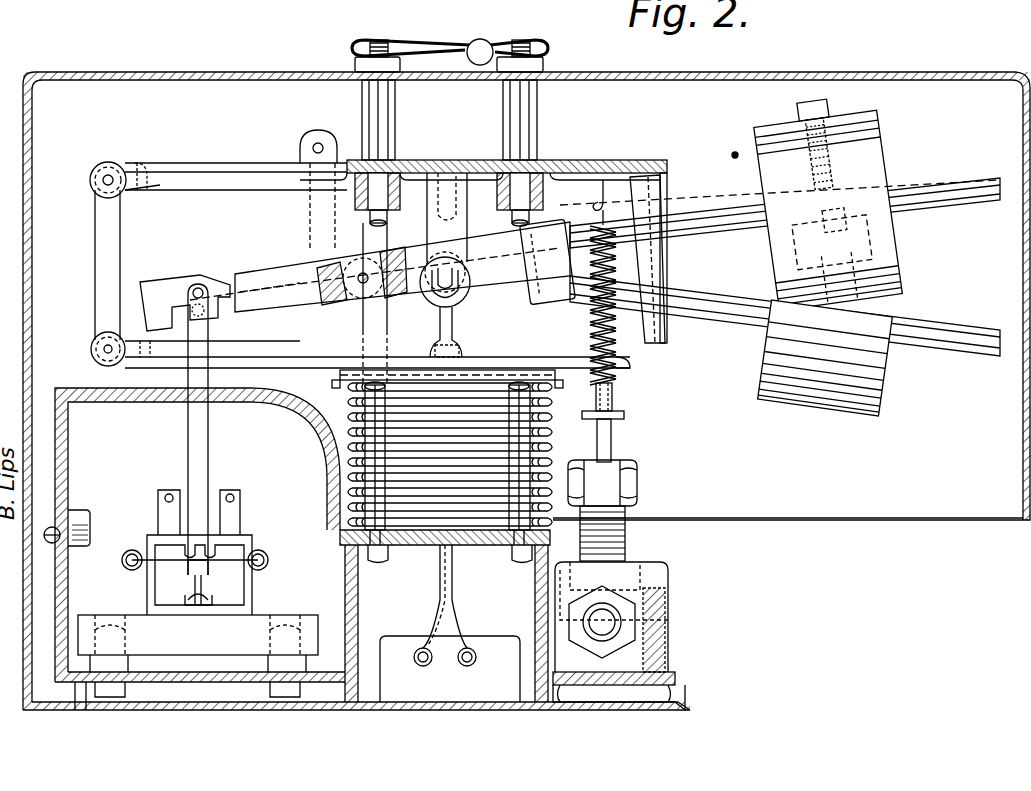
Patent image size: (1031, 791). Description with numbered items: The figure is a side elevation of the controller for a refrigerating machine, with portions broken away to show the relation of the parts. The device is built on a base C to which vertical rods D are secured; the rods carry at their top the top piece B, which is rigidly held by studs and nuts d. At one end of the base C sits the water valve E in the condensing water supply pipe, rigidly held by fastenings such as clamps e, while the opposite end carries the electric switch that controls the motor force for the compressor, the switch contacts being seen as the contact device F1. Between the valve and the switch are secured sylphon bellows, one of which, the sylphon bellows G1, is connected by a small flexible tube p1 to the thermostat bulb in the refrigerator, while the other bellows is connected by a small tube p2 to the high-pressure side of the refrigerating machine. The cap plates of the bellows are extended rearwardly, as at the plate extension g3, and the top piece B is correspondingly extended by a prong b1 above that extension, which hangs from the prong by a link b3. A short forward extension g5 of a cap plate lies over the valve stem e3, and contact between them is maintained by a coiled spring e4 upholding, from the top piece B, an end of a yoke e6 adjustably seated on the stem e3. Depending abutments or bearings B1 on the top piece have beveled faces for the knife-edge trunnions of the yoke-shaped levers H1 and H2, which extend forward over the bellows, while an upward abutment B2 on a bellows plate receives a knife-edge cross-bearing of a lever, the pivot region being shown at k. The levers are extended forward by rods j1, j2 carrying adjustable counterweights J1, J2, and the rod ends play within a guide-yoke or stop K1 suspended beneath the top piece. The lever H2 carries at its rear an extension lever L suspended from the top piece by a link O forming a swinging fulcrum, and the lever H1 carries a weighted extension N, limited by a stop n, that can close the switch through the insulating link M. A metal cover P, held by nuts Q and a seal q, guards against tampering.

The metal cover P is at (858, 71).
The nuts Q is at (357, 62).
The seal q is at (482, 40).
The studs and nuts d is at (503, 119).
The top piece B is at (228, 164).
The prong b1 is at (162, 180).
The link b3 is at (108, 247).
The link O is at (318, 190).
The plate extension g3 is at (160, 362).
The base C is at (112, 404).
The link M is at (203, 432).
The extension lever L is at (224, 298).
The depending abutments or bearings B1 is at (430, 200).
The yoke shaped lever H1 is at (466, 235).
The pivot block k is at (428, 298).
The abutment B2 is at (458, 332).
The weighted extension N is at (351, 280).
The stop n is at (358, 292).
The yoke shaped lever H2 is at (546, 308).
The forward extension g5 is at (630, 366).
The coiled spring e4 is at (614, 392).
The yoke e6 is at (624, 415).
The valve stem e3 is at (612, 446).
The clamps e is at (662, 628).
The water valve E is at (625, 612).
The sylphon bellows G1 is at (350, 395).
The vertical rods D is at (450, 456).
The flexible tube p1 is at (416, 662).
The tube p2 is at (466, 665).
The contact device F1 is at (198, 593).
The guide-yoke or stop K1 is at (658, 270).
The rod j1 is at (912, 194).
The rod j2 is at (918, 325).
The adjustable counterweight J1 is at (826, 201).
The adjustable counterweight J2 is at (825, 358).